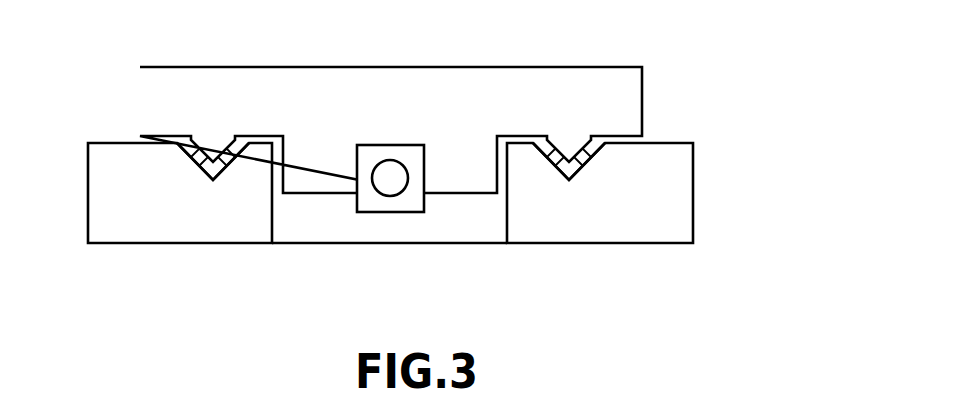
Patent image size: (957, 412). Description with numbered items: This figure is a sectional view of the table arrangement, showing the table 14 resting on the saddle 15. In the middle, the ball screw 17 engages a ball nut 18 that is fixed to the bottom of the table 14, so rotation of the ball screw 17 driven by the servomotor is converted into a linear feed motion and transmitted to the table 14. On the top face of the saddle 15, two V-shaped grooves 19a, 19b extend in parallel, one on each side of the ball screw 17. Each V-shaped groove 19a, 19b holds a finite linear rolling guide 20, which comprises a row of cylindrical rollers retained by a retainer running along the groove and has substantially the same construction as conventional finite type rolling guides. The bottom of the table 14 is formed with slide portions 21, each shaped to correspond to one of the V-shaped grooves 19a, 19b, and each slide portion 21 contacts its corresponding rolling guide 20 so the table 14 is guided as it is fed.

The table 14 is at (612, 75).
The saddle 15 is at (683, 182).
The ball screw 17 is at (392, 172).
The ball nut 18 is at (376, 202).
The V-shaped groove 19a is at (570, 182).
The V-shaped groove 19b is at (213, 183).
The finite linear rolling guide 20 is at (230, 152).
The slide portion 21 is at (193, 142).